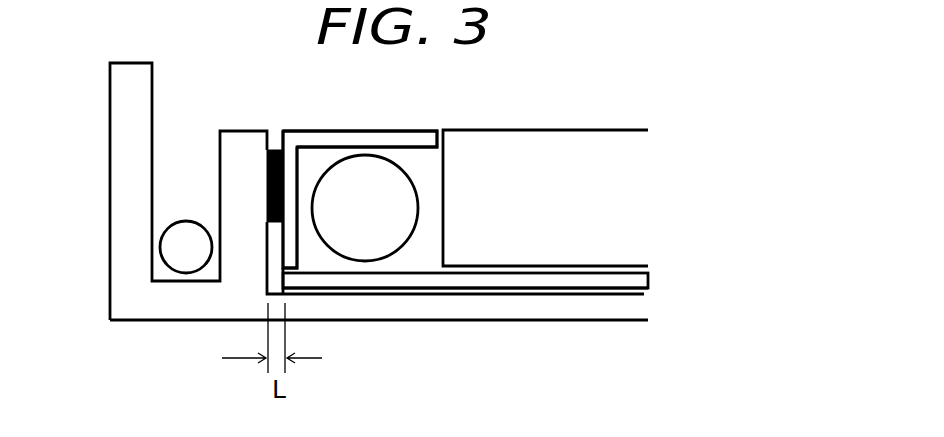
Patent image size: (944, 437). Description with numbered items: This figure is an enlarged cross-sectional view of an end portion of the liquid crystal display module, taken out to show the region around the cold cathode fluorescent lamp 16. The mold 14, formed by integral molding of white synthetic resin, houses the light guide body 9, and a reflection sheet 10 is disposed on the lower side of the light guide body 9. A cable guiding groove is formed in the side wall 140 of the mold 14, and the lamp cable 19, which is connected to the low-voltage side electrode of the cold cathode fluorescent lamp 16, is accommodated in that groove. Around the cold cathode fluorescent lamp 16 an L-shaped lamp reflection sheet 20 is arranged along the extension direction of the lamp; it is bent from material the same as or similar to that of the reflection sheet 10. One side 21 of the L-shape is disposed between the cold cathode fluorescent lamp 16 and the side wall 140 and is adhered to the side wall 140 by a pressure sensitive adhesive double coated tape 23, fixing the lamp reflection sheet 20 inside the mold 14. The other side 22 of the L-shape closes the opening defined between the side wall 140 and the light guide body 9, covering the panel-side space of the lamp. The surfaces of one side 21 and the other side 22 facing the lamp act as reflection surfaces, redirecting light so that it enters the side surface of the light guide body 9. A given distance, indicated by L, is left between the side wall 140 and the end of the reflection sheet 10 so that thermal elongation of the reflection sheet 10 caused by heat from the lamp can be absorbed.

The side wall 140 is at (110, 215).
The pressure sensitive adhesive double coated tape 23 is at (275, 150).
The lamp reflection sheet 20 is at (335, 131).
The other side 22 is at (412, 131).
The light guide body 9 is at (602, 131).
The lamp cable 19 is at (186, 268).
The one side 21 is at (300, 245).
The cold cathode fluorescent lamp 16 is at (375, 250).
The reflection sheet 10 is at (487, 283).
The mold 14 is at (593, 310).